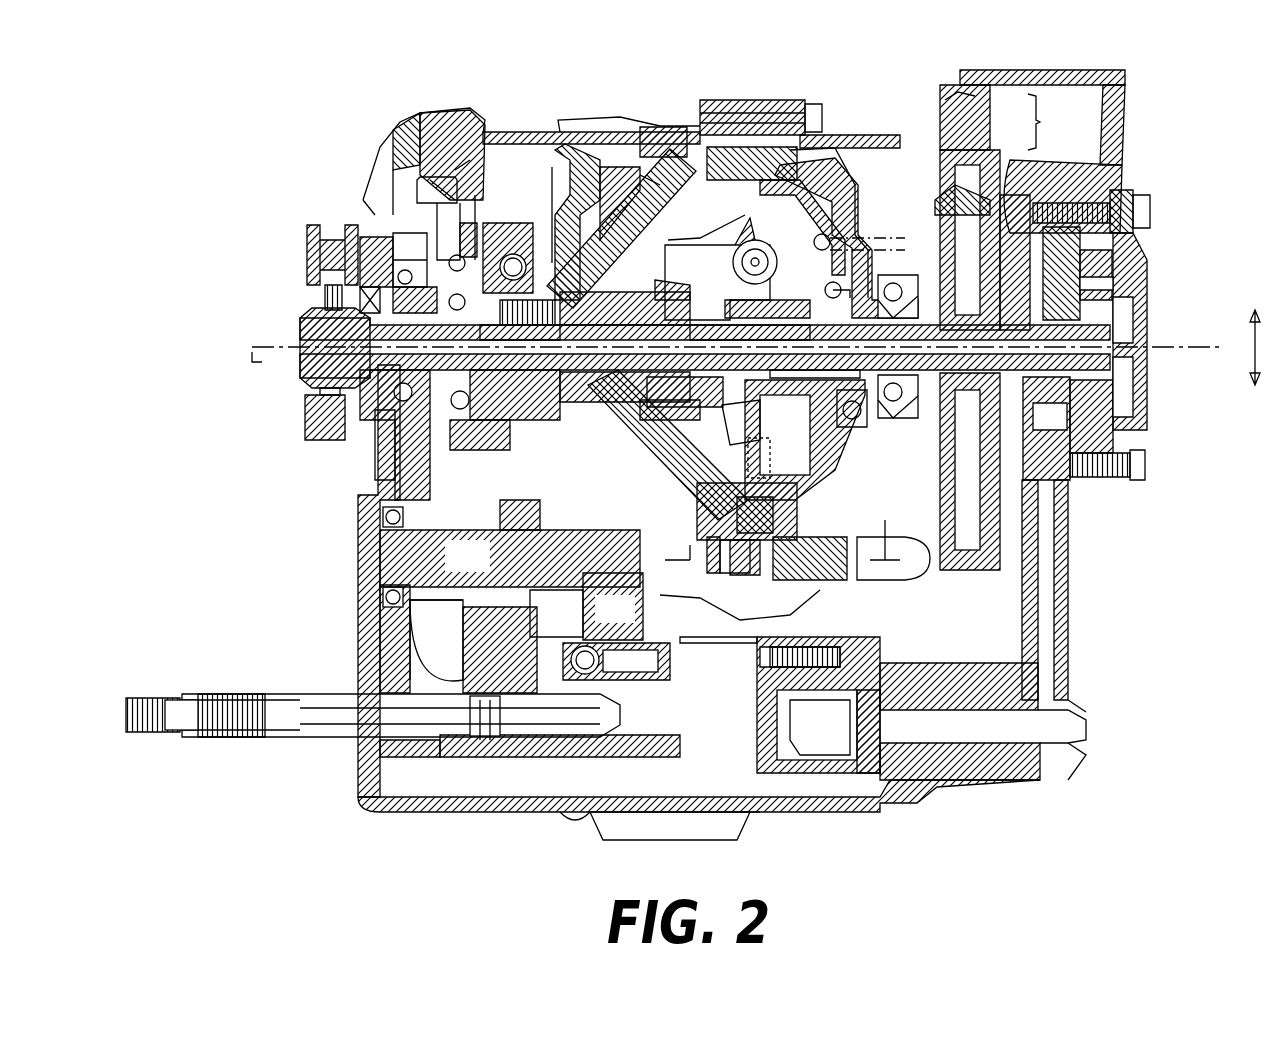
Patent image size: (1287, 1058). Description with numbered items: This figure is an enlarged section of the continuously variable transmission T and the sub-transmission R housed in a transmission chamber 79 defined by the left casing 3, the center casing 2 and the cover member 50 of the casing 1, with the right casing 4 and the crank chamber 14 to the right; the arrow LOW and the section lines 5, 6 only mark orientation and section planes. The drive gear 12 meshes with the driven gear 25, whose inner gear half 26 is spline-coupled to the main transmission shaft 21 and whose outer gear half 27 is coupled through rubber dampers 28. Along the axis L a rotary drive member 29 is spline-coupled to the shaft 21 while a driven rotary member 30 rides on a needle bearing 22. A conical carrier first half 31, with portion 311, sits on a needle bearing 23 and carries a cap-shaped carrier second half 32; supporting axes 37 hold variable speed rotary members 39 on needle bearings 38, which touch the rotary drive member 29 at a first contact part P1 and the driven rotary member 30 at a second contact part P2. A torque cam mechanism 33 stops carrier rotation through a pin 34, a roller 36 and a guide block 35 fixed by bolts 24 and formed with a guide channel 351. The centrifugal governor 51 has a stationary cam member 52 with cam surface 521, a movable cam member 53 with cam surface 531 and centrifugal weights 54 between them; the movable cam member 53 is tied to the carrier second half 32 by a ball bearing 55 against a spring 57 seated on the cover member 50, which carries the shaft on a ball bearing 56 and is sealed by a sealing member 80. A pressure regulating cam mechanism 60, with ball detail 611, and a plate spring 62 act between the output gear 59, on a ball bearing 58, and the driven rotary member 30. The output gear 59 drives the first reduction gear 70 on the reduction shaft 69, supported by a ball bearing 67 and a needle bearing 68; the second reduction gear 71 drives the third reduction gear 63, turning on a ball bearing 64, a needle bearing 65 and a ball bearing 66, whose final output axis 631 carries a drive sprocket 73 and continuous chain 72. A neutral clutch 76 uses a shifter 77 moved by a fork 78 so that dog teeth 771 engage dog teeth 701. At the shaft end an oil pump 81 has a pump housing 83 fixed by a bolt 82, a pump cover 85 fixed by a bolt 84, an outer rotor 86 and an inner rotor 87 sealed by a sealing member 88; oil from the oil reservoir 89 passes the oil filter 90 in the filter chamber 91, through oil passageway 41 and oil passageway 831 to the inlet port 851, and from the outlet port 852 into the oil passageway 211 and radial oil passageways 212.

The casing 1 is at (665, 840).
The center casing 2 is at (640, 812).
The left casing 3 is at (590, 815).
The right casing 4 is at (745, 812).
The oil passageway 41 is at (1068, 558).
The section line 5 is at (885, 555).
The section line 6 is at (552, 262).
The drive gear 12 is at (940, 108).
The crank chamber 14 is at (986, 548).
The main transmission shaft 21 is at (300, 370).
The oil passageway 211 is at (815, 372).
The oil passageways 212 is at (645, 341).
The needle bearing 22 is at (525, 392).
The needle bearing 23 is at (590, 312).
The bolts 24 is at (735, 572).
The driven gear 25 is at (1040, 122).
The inner gear half 26 is at (1015, 192).
The outer gear half 27 is at (985, 160).
The rubber dampers 28 is at (948, 212).
The rotary drive member 29 is at (717, 282).
The driven rotary member 30 is at (590, 138).
The carrier first half 31 is at (692, 150).
The cover flange 311 is at (645, 160).
The carrier second half 32 is at (815, 170).
The torque cam mechanism 33 is at (780, 705).
The pin 34 is at (800, 520).
The guide block 35 is at (880, 580).
The guide channel 351 is at (725, 578).
The roller 36 is at (774, 582).
The supporting axes 37 is at (652, 292).
The needle bearings 38 is at (724, 416).
The variable speed rotary members 39 is at (628, 150).
The cover member 50 is at (840, 580).
The centrifugal governor 51 is at (790, 290).
The stationary cam member 52 is at (748, 415).
The cam surface 521 is at (745, 220).
The movable cam member 53 is at (805, 450).
The cam surface 531 is at (840, 185).
The centrifugal weights 54 is at (760, 300).
The ball bearing 55 is at (844, 277).
The ball bearing 56 is at (899, 305).
The spring 57 is at (822, 236).
The ball bearing 58 is at (512, 430).
The output gear 59 is at (460, 195).
The pressure regulating cam mechanism 60 is at (530, 220).
The cam follower 611 is at (524, 320).
The plate spring 62 is at (513, 253).
The third reduction gear 63 is at (393, 185).
The final output axis 631 is at (300, 320).
The ball bearing 64 is at (410, 440).
The needle bearing 65 is at (370, 430).
The ball bearing 66 is at (405, 250).
The ball bearing 67 is at (383, 600).
The needle bearing 68 is at (613, 606).
The reduction shaft 69 is at (456, 567).
The first reduction gear 70 is at (470, 640).
The dog teeth 701 is at (470, 625).
The second reduction gear 71 is at (360, 653).
The continuous chain 72 is at (306, 245).
The drive sprocket 73 is at (322, 442).
The neutral clutch 76 is at (520, 690).
The shifter 77 is at (520, 515).
The dog teeth 771 is at (523, 642).
The fork 78 is at (548, 688).
The transmission chamber 79 is at (732, 174).
The sealing member 80 is at (930, 340).
The oil pump 81 is at (1125, 305).
The bolt 82 is at (1150, 210).
The pump housing 83 is at (1110, 195).
The oil passageway 831 is at (1051, 417).
The bolt 84 is at (1140, 480).
The pump cover 85 is at (1148, 438).
The inlet port 851 is at (1135, 380).
The outlet port 852 is at (1135, 325).
The outer rotor 86 is at (1055, 256).
The inner rotor 87 is at (1145, 395).
The sealing member 88 is at (1023, 415).
The oil reservoir 89 is at (436, 785).
The oil filter 90 is at (800, 722).
The filter chamber 91 is at (848, 750).
The sub-transmission R is at (455, 170).
The continuously variable transmission T is at (800, 190).
The axis L is at (254, 359).
The first contact part P1 is at (706, 237).
The second contact part P2 is at (628, 150).
The direction LOW is at (1250, 344).